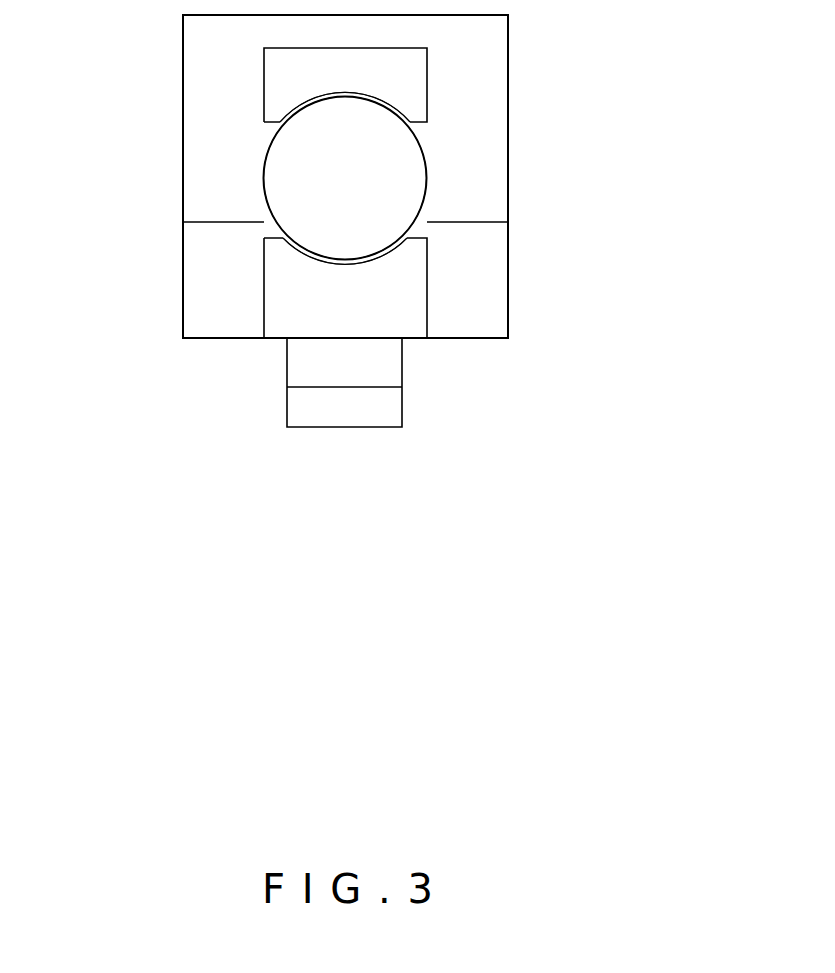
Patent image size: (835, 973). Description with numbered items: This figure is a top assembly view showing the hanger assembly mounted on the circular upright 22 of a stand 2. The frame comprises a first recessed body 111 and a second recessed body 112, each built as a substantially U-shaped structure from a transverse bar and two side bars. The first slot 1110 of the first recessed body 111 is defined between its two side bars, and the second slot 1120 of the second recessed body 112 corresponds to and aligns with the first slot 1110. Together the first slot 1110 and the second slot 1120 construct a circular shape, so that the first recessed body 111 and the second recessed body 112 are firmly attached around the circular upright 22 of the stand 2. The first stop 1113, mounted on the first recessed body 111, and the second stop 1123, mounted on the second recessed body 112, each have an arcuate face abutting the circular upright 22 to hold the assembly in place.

The first recessed body 111 is at (226, 78).
The second recessed body 112 is at (226, 296).
The first stop 1113 is at (411, 75).
The second stop 1123 is at (411, 290).
The first slot 1110 is at (400, 167).
The second slot 1120 is at (345, 251).
The stand 2 is at (272, 151).
The circular upright 22 is at (283, 177).